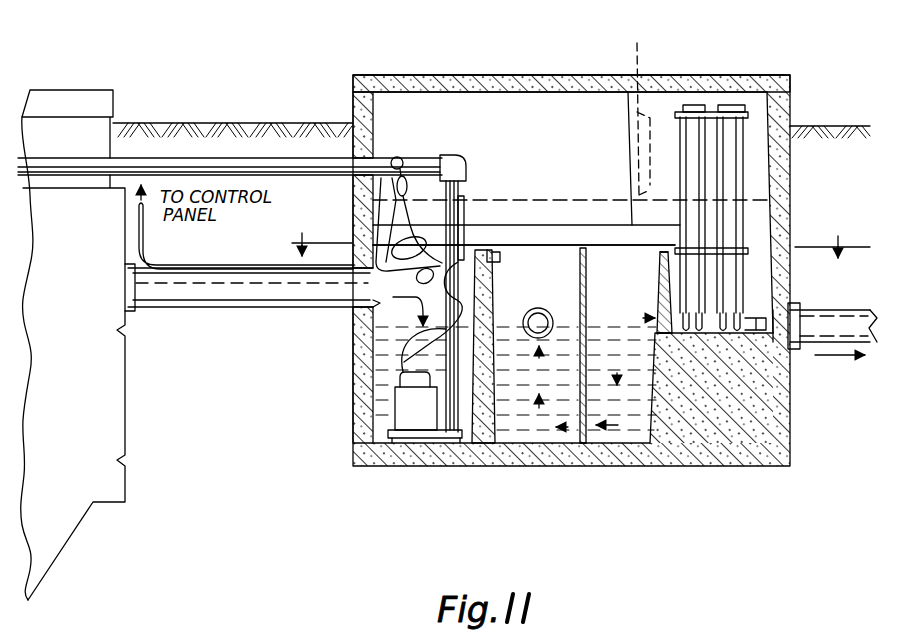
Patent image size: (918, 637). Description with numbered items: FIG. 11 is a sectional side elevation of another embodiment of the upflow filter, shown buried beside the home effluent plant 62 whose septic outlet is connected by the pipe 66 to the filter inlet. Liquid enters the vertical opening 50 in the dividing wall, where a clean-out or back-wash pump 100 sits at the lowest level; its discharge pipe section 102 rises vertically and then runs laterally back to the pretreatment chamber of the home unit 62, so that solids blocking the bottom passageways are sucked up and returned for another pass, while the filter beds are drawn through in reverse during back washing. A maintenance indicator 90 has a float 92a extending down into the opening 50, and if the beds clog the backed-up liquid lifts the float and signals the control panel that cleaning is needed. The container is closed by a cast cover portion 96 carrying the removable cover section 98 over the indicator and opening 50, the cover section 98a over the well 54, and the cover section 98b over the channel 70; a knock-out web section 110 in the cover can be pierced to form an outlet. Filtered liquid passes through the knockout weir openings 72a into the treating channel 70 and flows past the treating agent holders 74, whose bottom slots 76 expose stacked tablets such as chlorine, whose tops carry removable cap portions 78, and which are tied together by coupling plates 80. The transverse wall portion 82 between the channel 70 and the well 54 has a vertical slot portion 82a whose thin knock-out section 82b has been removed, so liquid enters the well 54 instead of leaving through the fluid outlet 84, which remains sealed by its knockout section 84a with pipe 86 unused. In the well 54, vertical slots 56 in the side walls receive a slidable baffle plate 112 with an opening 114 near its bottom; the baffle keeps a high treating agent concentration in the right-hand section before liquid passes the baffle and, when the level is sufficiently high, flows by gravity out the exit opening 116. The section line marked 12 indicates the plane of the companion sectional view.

The section line 12- 12 is at (571, 241).
The vertical opening 50 is at (369, 313).
The well 54 is at (497, 272).
The vertical slots 56 is at (584, 268).
The home effluent plant 62 is at (131, 403).
The pipe 66 is at (228, 308).
The channel 70 is at (669, 360).
The removable weir sections 72a is at (767, 316).
The treating agent holder 74 is at (753, 181).
The slots 76 is at (731, 296).
The cap portions 78 is at (722, 105).
The coupling plates 80 is at (753, 116).
The transverse wall portion 82 is at (658, 266).
The vertical slot portion 82a is at (672, 268).
The knock-out section 82b is at (657, 311).
The fluid outlet 84 is at (829, 336).
The knockout section 84a is at (788, 326).
The pipe 86 is at (855, 311).
The maintenance indicator 90 is at (477, 240).
The float 92a is at (422, 284).
The cover portion 96 is at (579, 74).
The removable cover section 98 is at (571, 249).
The removable cover section 98a is at (515, 75).
The removable cover section 98b is at (668, 75).
The back wash flushing pump 100 is at (398, 418).
The pipe section 102 is at (232, 158).
The removable web section 110 is at (636, 60).
The baffle plate 112 is at (580, 301).
The opening 114 is at (582, 445).
The exit opening 116 is at (533, 310).